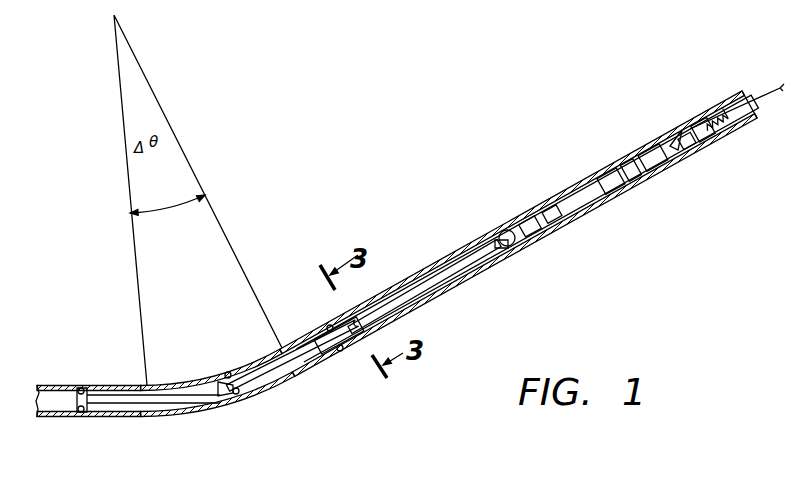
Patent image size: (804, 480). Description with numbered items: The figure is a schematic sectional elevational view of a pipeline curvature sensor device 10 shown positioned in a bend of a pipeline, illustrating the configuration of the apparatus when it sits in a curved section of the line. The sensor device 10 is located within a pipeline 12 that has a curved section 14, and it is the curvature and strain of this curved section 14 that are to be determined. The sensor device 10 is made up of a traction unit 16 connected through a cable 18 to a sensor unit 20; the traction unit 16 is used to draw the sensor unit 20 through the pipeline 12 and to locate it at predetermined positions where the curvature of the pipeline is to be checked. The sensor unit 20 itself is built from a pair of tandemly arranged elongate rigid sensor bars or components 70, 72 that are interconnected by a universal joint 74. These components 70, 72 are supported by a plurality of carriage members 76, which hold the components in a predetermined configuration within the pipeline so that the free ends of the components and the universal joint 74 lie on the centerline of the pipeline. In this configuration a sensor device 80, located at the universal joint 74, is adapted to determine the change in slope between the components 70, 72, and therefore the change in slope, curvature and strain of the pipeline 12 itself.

The pipeline curvature sensor device 10 is at (320, 213).
The pipeline 12 is at (540, 197).
The curved section 14 is at (318, 366).
The traction unit 16 is at (668, 182).
The cable 18 is at (425, 270).
The sensor unit 20 is at (210, 398).
The sensor bar 70 is at (130, 403).
The sensor bar 72 is at (312, 348).
The universal joint 74 is at (232, 396).
The carriage members 76 is at (114, 374).
The sensor device 80 is at (209, 365).